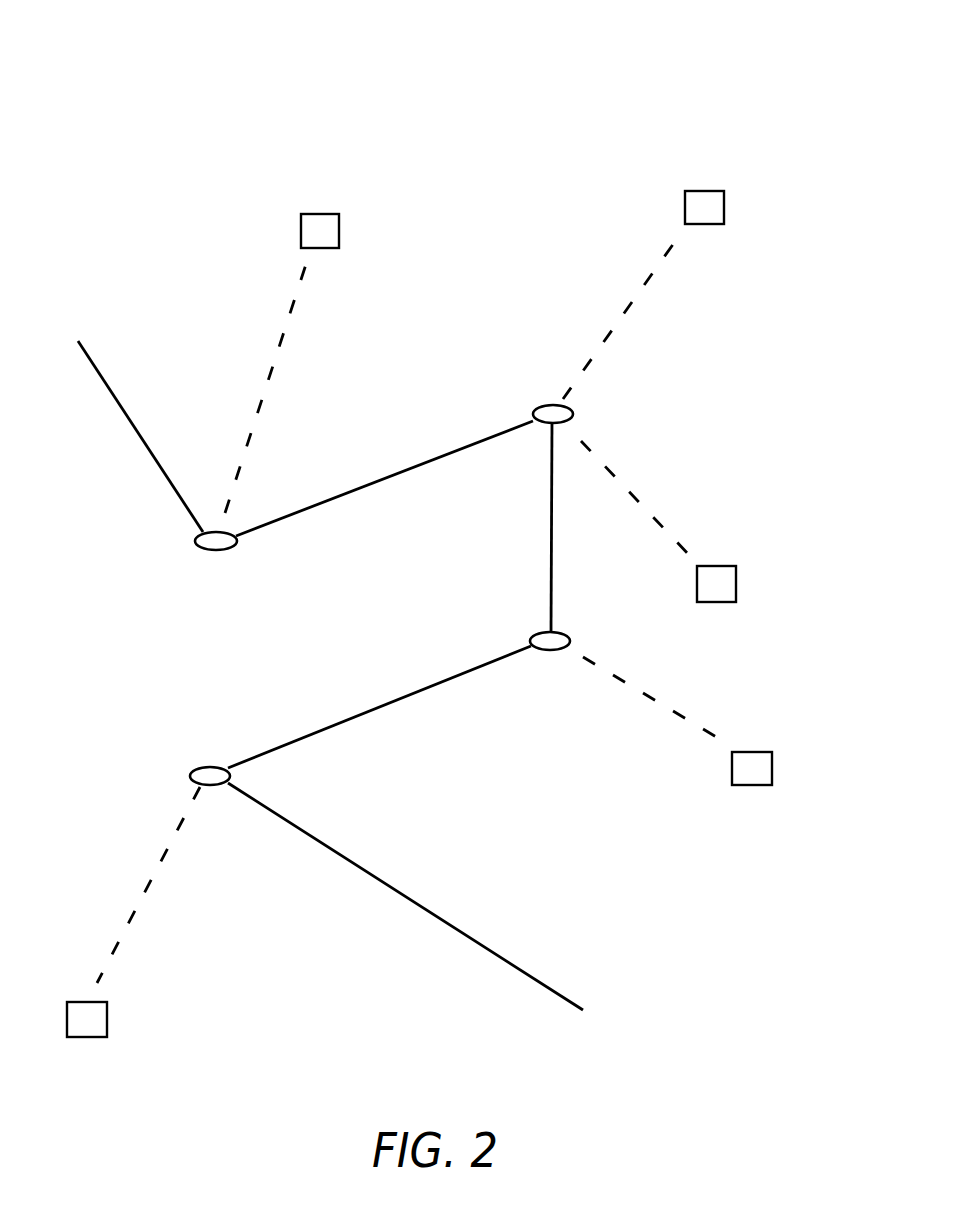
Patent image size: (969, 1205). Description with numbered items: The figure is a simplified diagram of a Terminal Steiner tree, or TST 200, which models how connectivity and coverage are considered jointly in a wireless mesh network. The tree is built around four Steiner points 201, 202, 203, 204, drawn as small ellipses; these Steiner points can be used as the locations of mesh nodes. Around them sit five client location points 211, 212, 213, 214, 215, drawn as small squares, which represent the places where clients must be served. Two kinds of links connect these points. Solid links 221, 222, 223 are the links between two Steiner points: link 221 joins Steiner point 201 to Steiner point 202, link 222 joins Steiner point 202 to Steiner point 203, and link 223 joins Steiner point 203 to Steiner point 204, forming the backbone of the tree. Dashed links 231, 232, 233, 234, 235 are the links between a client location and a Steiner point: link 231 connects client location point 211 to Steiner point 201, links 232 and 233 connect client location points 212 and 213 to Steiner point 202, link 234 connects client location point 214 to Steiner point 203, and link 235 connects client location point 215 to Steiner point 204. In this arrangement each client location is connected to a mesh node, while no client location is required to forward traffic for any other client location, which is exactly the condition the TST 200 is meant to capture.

The Terminal Steiner tree 200 is at (468, 46).
The Steiner point 201 is at (232, 548).
The Steiner point 202 is at (573, 412).
The Steiner point 203 is at (567, 633).
The Steiner point 204 is at (230, 778).
The client location point 211 is at (339, 222).
The client location point 212 is at (724, 202).
The client location point 213 is at (736, 583).
The client location point 214 is at (772, 777).
The client location point 215 is at (107, 1012).
The link 221 is at (332, 500).
The link 222 is at (552, 545).
The link 223 is at (370, 710).
The link 231 is at (268, 372).
The link 232 is at (624, 313).
The link 233 is at (634, 493).
The link 234 is at (647, 695).
The link 235 is at (153, 877).